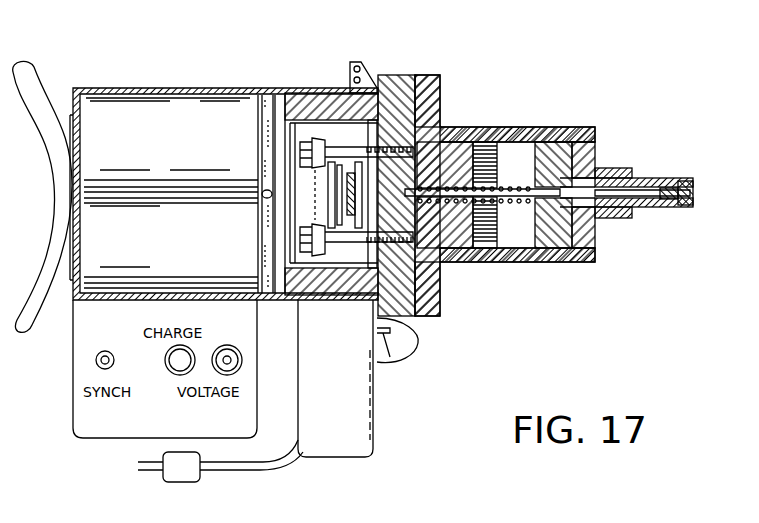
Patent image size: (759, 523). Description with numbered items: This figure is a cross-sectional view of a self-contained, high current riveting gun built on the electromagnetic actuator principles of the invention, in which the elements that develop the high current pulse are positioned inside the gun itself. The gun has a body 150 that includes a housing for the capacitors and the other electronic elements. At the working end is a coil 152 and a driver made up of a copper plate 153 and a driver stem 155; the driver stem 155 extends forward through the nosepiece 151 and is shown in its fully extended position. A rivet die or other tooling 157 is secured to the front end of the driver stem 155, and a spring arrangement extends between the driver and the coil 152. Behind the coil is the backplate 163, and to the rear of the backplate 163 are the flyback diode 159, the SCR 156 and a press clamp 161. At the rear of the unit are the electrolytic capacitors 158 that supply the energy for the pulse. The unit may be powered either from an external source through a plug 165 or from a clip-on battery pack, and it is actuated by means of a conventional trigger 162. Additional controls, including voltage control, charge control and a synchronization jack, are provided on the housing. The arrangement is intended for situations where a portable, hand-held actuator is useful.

The body 150 is at (449, 91).
The nosepiece 151 is at (615, 168).
The coil 152 is at (485, 142).
The copper plate 153 is at (547, 141).
The driver stem 155 is at (648, 207).
The SCR 156 is at (337, 272).
The rivet die or other tooling 157 is at (695, 207).
The electrolytic capacitors 158 is at (243, 90).
The flyback diode 159 is at (336, 125).
The press clamp 161 is at (317, 255).
The trigger 162 is at (390, 347).
The backplate 163 is at (403, 75).
The plug 165 is at (192, 473).